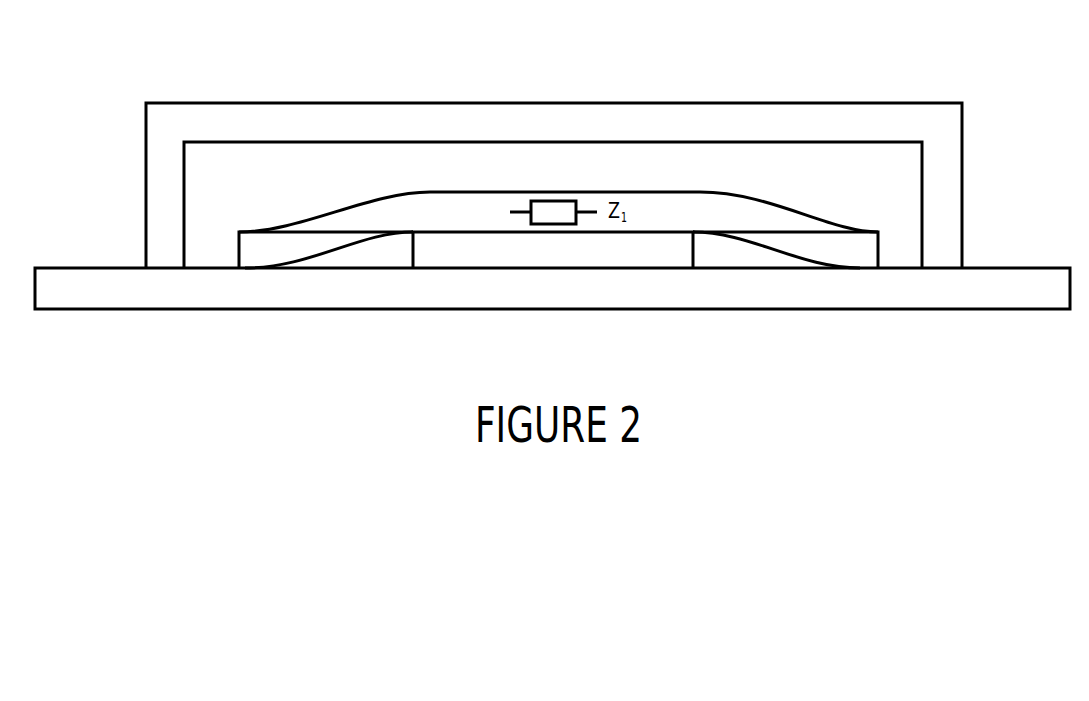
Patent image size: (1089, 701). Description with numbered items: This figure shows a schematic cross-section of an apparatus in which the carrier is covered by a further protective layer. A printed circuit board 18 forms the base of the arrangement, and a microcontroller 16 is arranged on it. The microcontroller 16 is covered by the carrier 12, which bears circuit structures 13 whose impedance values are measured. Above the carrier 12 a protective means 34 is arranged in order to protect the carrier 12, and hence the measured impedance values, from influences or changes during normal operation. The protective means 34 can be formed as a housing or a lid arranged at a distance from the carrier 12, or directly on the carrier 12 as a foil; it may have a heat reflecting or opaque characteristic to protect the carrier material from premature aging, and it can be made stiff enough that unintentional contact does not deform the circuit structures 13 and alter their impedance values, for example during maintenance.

The carrier 12 is at (880, 250).
The circuit structures 13 is at (577, 218).
The microcontroller 16 is at (413, 250).
The printed circuit board 18 is at (78, 267).
The protective means 34 is at (551, 102).